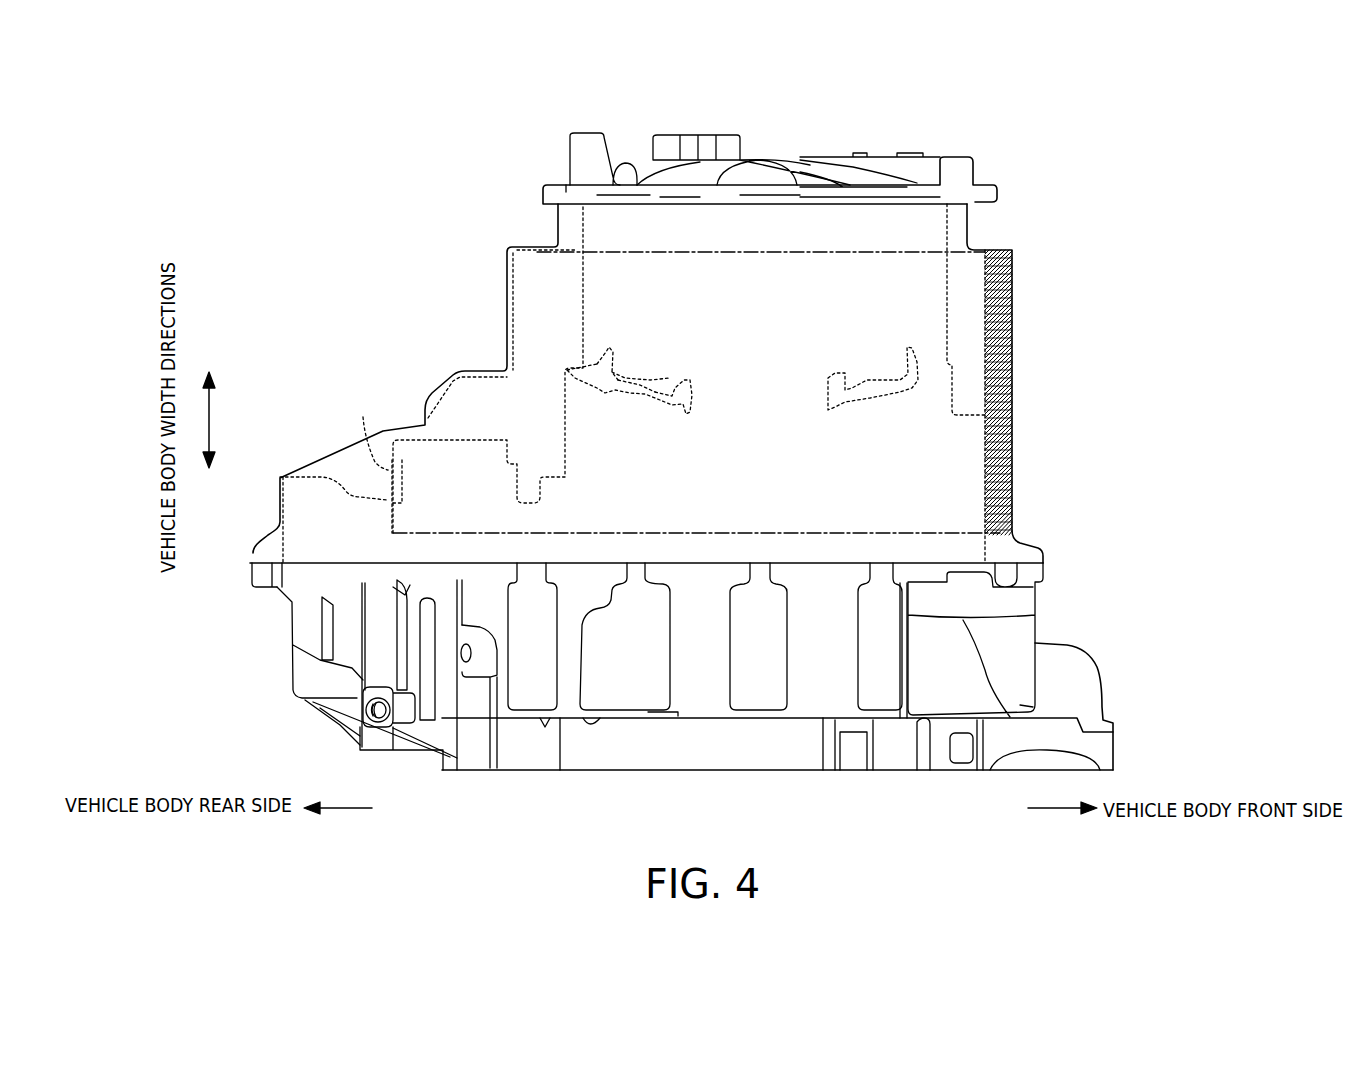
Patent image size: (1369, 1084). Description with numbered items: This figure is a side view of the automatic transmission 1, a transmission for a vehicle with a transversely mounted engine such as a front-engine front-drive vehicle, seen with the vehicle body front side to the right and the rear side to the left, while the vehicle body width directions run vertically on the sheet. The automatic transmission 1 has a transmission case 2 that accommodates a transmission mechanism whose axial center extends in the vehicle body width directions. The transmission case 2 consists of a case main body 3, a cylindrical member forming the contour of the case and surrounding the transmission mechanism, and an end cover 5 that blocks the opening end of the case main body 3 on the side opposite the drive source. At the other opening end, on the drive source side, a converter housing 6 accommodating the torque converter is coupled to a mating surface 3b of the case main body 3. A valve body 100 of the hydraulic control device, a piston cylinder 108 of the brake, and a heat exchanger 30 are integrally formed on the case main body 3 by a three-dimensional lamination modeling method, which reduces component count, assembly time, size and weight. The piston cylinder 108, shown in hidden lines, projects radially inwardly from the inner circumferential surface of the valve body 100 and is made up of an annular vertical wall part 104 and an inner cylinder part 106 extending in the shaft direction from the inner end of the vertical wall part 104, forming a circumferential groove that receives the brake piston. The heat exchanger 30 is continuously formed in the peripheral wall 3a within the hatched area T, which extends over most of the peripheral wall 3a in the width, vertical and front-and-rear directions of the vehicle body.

The automatic transmission 1 is at (1070, 170).
The transmission case 2 is at (990, 172).
The case main body 3 is at (993, 246).
The peripheral wall 3a is at (1013, 274).
The mating surface 3b is at (712, 563).
The heat exchanger 30 is at (1013, 328).
The end cover 5 is at (880, 165).
The converter housing 6 is at (1022, 632).
The valve body 100 is at (584, 283).
The vertical wall part 104 is at (650, 405).
The inner cylinder part 106 is at (698, 390).
The piston cylinder 108 is at (637, 370).
The area T is at (371, 431).